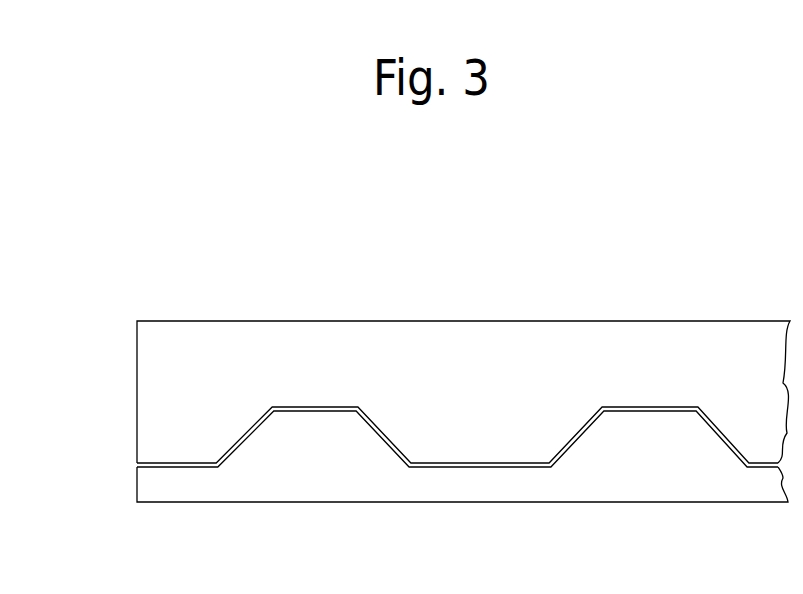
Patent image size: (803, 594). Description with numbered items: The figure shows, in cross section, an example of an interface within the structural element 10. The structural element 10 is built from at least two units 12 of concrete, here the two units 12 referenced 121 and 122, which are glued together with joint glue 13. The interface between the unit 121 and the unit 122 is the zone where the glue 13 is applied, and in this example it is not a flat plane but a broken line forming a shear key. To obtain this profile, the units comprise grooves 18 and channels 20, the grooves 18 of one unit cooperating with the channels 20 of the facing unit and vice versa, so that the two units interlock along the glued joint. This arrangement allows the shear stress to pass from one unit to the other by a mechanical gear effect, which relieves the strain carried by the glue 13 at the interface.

The structural element 10 is at (176, 298).
The units 12 is at (70, 395).
The unit 121 is at (170, 400).
The unit 122 is at (165, 485).
The joint glue 13 is at (453, 464).
The grooves 18 is at (178, 450).
The channels 20 is at (310, 407).